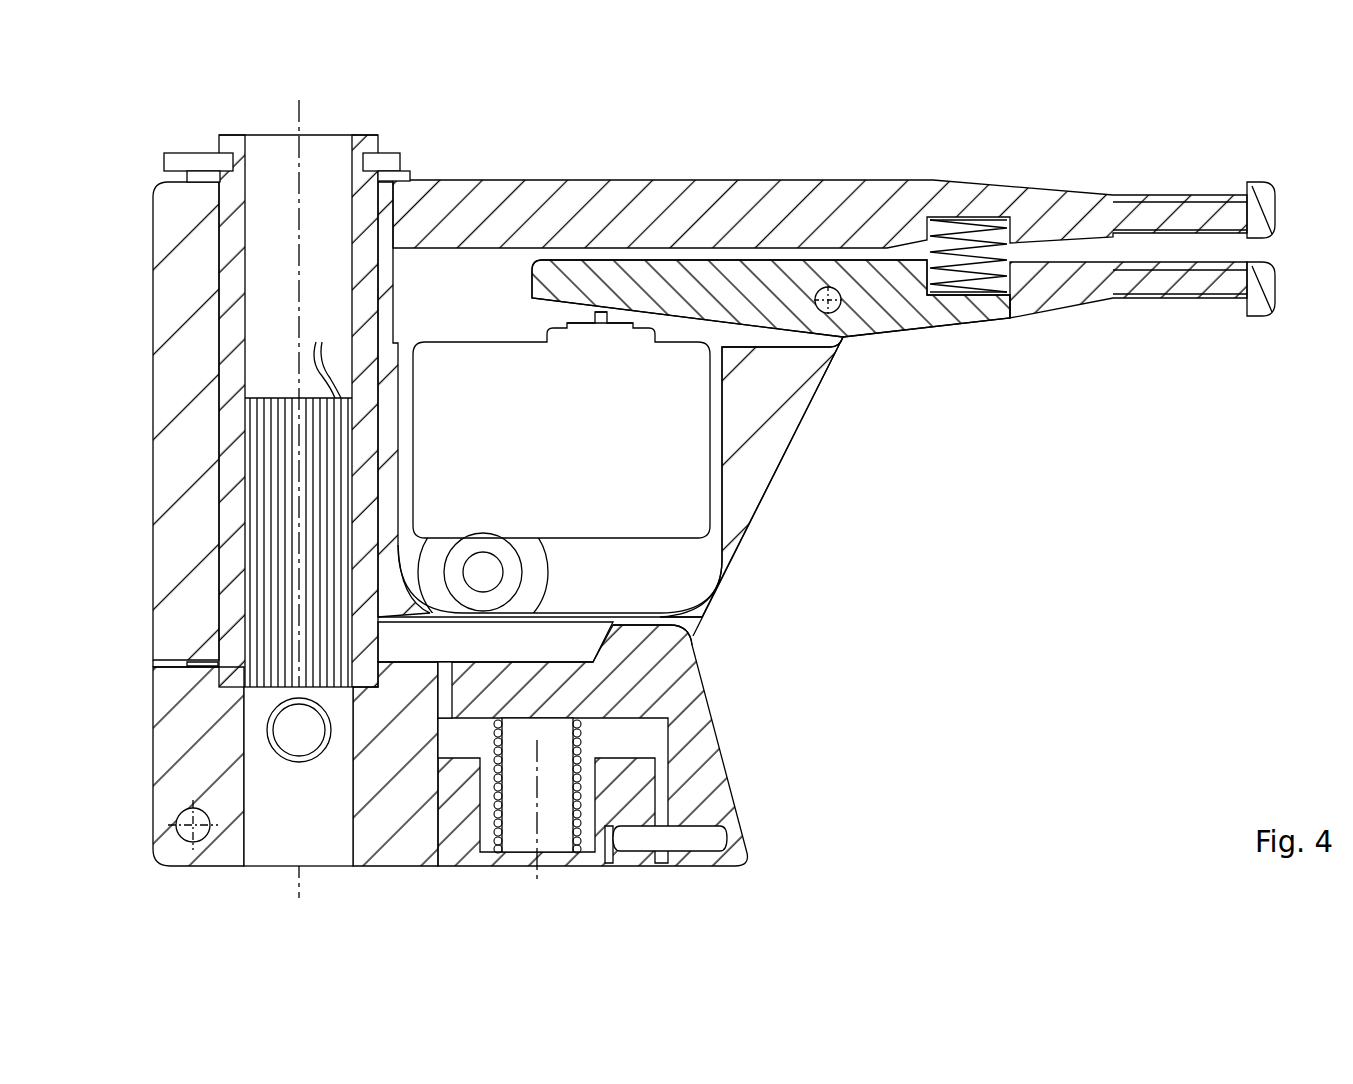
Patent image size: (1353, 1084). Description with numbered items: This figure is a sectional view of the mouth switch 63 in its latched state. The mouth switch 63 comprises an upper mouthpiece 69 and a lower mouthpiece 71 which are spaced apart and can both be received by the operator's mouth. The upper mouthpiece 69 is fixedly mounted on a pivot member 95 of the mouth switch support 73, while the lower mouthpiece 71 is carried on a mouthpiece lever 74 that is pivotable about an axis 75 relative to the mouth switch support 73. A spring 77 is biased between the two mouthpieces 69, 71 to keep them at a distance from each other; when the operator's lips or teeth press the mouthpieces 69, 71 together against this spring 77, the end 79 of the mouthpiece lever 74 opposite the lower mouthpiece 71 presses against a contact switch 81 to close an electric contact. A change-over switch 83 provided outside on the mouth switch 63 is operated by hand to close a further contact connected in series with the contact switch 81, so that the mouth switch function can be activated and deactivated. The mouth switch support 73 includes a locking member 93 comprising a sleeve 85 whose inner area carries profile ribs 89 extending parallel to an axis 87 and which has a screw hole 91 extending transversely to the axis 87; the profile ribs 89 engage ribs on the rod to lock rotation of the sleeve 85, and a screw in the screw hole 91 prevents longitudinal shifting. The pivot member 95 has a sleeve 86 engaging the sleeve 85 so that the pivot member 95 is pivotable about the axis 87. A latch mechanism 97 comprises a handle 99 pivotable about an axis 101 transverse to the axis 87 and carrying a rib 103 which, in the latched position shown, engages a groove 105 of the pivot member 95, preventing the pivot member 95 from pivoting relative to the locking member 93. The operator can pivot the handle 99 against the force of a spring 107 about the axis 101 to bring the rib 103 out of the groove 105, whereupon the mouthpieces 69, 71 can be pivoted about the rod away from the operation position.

The mouth switch 63 is at (1148, 515).
The upper mouthpiece 69 is at (1165, 197).
The lower mouthpiece 71 is at (1165, 299).
The mouth switch support 73 is at (798, 440).
The mouthpiece lever 74 is at (938, 326).
The axis 75 is at (838, 308).
The spring 77 is at (982, 280).
The end of the mouthpiece lever 79 is at (556, 301).
The contact switch 81 is at (452, 338).
The change-over switch 83 is at (550, 577).
The sleeve 85 is at (368, 135).
The sleeve 86 is at (152, 305).
The axis 87 is at (297, 118).
The profile ribs 89 is at (299, 496).
The screw hole 91 is at (320, 758).
The locking member 93 is at (442, 868).
The pivot member 95 is at (762, 512).
The latch mechanism 97 is at (790, 770).
The handle 99 is at (723, 740).
The axis 101 is at (206, 840).
The rib 103 is at (700, 628).
The groove 105 is at (481, 648).
The spring 107 is at (505, 852).